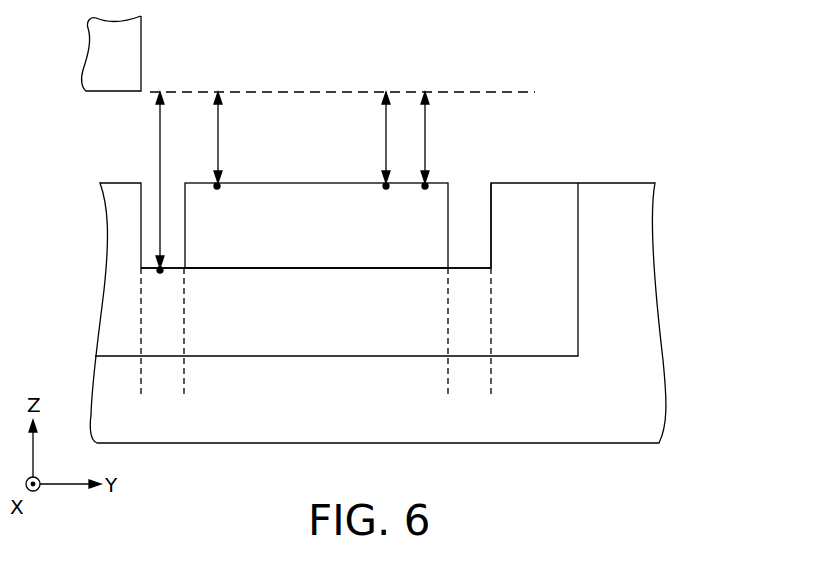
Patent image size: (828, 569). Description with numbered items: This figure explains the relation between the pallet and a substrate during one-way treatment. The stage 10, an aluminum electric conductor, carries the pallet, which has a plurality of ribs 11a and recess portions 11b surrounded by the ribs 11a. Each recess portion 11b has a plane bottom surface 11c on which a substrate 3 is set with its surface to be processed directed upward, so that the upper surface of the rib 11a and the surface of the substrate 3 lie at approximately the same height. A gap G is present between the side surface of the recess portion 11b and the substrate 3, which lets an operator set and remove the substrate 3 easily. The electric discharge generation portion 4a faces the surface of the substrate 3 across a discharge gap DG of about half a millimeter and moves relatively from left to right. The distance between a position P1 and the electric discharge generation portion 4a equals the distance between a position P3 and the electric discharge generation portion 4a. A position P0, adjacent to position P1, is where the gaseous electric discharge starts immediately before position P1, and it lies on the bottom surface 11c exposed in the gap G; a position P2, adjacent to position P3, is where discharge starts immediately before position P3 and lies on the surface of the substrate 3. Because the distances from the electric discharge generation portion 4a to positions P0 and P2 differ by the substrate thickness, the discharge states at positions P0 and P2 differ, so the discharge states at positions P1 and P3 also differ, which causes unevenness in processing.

The stage 10 is at (662, 397).
The rib 11a is at (570, 262).
The recess portion 11b is at (486, 171).
The bottom surface 11c is at (216, 272).
The substrate 3 is at (321, 265).
The electric discharge generation portion 4a is at (113, 80).
The position P0 is at (160, 274).
The position P1 is at (217, 190).
The position P2 is at (386, 190).
The position P3 is at (425, 190).
The discharge gap DG is at (160, 124).
The gap G is at (184, 392).